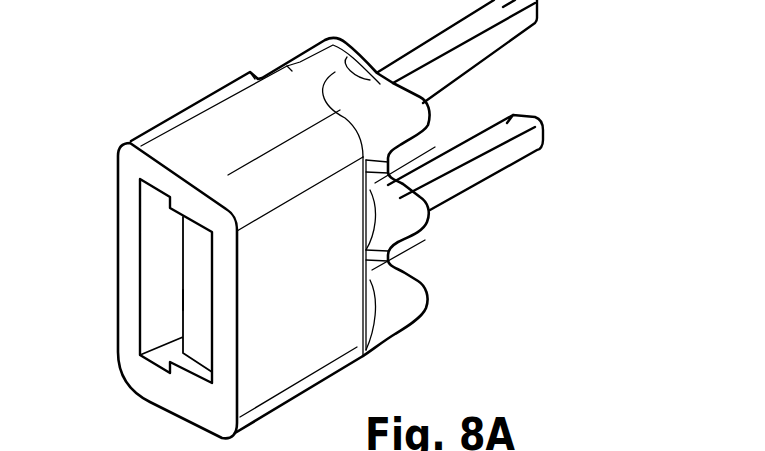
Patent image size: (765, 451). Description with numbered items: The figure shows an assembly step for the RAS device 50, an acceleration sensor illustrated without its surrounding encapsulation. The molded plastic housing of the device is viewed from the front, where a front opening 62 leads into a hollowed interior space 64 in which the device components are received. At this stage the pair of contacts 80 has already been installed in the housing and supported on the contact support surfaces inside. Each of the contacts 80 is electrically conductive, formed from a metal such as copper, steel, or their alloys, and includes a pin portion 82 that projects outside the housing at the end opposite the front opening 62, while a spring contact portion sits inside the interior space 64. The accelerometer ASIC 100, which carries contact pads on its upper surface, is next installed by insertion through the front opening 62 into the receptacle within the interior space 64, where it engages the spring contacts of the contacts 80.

The RAS device 50 is at (607, 120).
The front opening 62 is at (160, 213).
The hollowed interior space 64 is at (157, 249).
The accelerometer ASIC 100 is at (188, 298).
The contacts 80 is at (482, 43).
The pin portion 82 is at (483, 163).